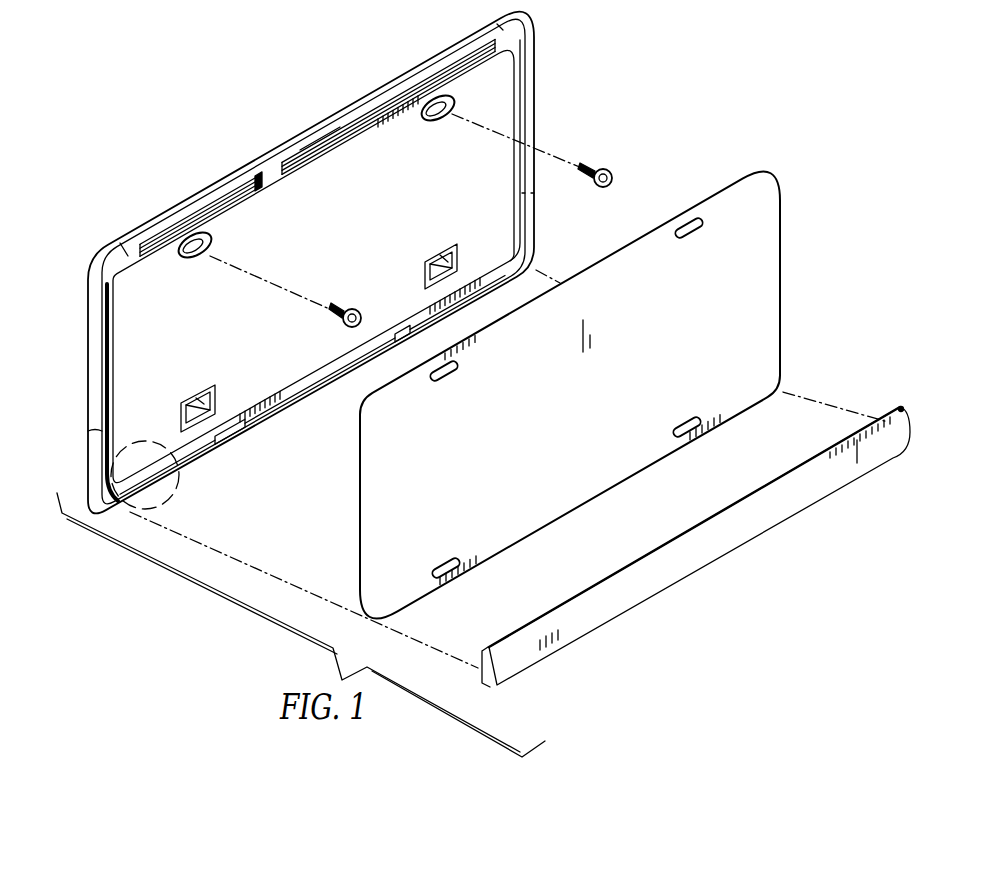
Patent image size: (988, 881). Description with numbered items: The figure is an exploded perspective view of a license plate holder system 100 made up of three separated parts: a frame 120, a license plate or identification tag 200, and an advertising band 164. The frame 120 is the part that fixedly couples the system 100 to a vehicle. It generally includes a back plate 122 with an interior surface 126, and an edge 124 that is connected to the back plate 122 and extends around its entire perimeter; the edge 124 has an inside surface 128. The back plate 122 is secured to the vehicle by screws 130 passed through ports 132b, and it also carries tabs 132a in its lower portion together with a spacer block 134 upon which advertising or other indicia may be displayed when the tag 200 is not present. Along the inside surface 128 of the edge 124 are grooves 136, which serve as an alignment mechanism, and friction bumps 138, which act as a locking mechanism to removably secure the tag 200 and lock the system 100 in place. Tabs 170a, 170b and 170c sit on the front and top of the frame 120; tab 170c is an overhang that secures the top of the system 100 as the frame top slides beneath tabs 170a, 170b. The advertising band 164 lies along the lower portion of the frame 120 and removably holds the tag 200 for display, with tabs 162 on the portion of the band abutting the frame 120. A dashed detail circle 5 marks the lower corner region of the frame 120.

The license plate holder system 100 is at (783, 64).
The frame 120 is at (74, 352).
The back plate 122 is at (256, 174).
The edge 124 is at (186, 202).
The interior surface 126 is at (140, 387).
The inside surface 128 is at (340, 378).
The screws 130 is at (610, 175).
The tabs 132a is at (426, 267).
The ports 132b is at (214, 248).
The spacer block 134 is at (104, 316).
The grooves 136 is at (314, 380).
The friction bumps 138 is at (481, 272).
The tab 170a is at (133, 268).
The tab 170b is at (502, 48).
The tab 170c is at (323, 145).
The license plate or identification tag 200 is at (330, 525).
The detail circle 5 is at (167, 512).
The tabs 162 is at (480, 672).
The advertising band 164 is at (529, 658).